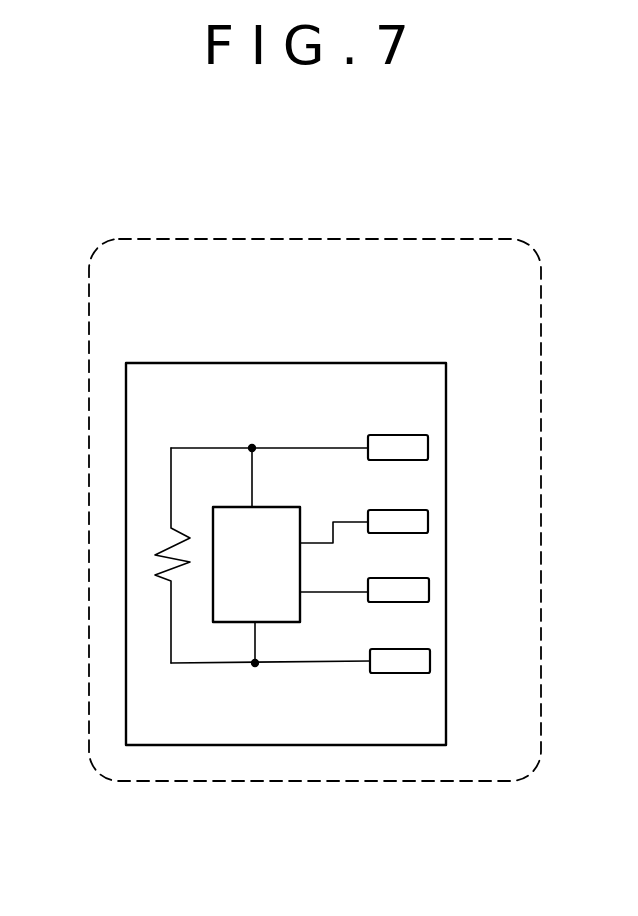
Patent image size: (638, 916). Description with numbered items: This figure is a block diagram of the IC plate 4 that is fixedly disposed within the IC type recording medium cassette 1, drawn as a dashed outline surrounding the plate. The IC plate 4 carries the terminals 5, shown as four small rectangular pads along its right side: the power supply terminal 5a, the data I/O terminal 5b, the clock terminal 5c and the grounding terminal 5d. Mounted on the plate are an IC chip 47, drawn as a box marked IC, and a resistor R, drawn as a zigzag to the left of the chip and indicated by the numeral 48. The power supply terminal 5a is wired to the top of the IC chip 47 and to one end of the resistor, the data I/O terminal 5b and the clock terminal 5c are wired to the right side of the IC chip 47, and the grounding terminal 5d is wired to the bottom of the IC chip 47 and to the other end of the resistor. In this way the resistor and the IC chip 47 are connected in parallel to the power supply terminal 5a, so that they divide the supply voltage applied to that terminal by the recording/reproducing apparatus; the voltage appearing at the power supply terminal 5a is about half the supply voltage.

The IC type recording medium cassette 1 is at (427, 240).
The IC plate 4 is at (430, 372).
The terminals 5 is at (404, 679).
The power supply terminal 5a is at (422, 434).
The data I/O terminal 5b is at (422, 510).
The clock terminal 5c is at (422, 578).
The grounding terminal 5d is at (420, 650).
The IC chip 47 is at (235, 613).
The resistor 48 is at (155, 559).